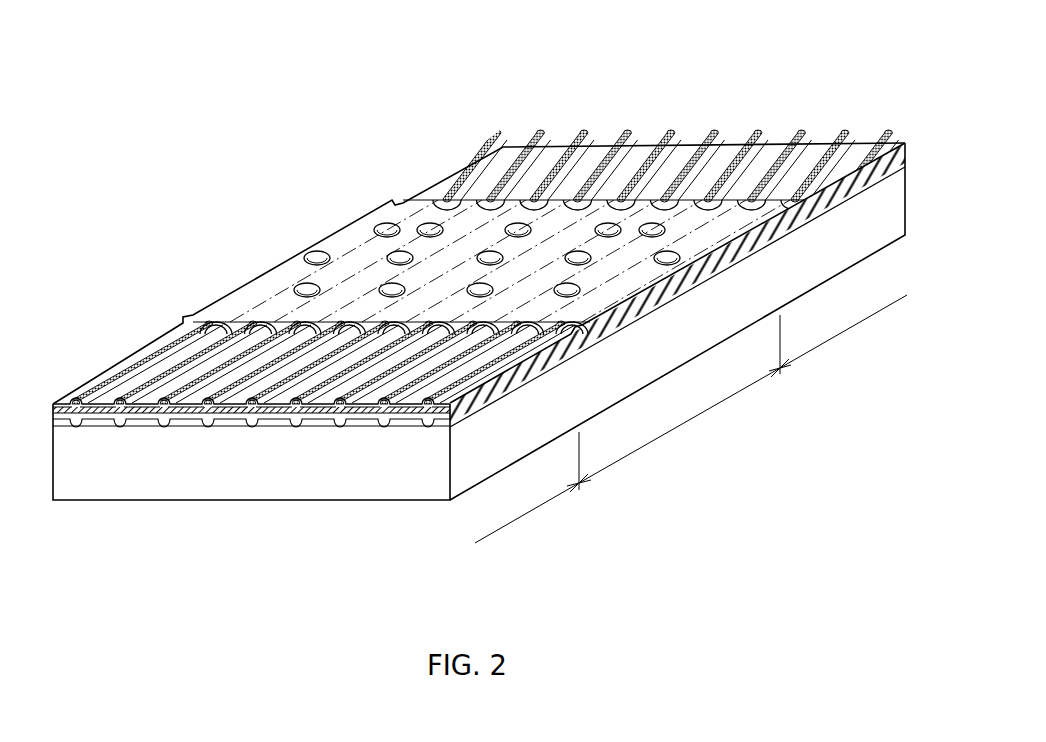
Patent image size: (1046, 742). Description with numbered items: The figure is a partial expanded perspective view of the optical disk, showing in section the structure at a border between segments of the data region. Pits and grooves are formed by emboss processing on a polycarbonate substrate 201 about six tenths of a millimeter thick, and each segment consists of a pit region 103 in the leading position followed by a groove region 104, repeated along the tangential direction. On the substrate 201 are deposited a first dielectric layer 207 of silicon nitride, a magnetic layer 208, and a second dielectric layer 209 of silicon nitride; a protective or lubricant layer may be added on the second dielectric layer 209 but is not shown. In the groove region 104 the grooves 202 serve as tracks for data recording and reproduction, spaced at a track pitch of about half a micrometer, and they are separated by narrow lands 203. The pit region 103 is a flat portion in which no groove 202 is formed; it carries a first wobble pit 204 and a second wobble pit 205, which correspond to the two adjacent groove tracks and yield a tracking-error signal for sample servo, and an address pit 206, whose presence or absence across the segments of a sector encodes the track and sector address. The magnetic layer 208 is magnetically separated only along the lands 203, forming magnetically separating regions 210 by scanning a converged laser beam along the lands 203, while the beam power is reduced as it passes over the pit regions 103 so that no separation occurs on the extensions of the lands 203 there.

The polycarbonate substrate 201 is at (218, 468).
The groove 202 is at (190, 342).
The land 203 is at (228, 325).
The first wobble pit 204 is at (385, 288).
The second wobble pit 205 is at (393, 256).
The address pit 206 is at (422, 229).
The first dielectric layer 207 is at (273, 424).
The magnetic layer 208 is at (320, 419).
The second dielectric layer 209 is at (363, 409).
The magnetically separating region 210 is at (675, 225).
The pit region 103 is at (679, 425).
The groove region 104 is at (691, 419).